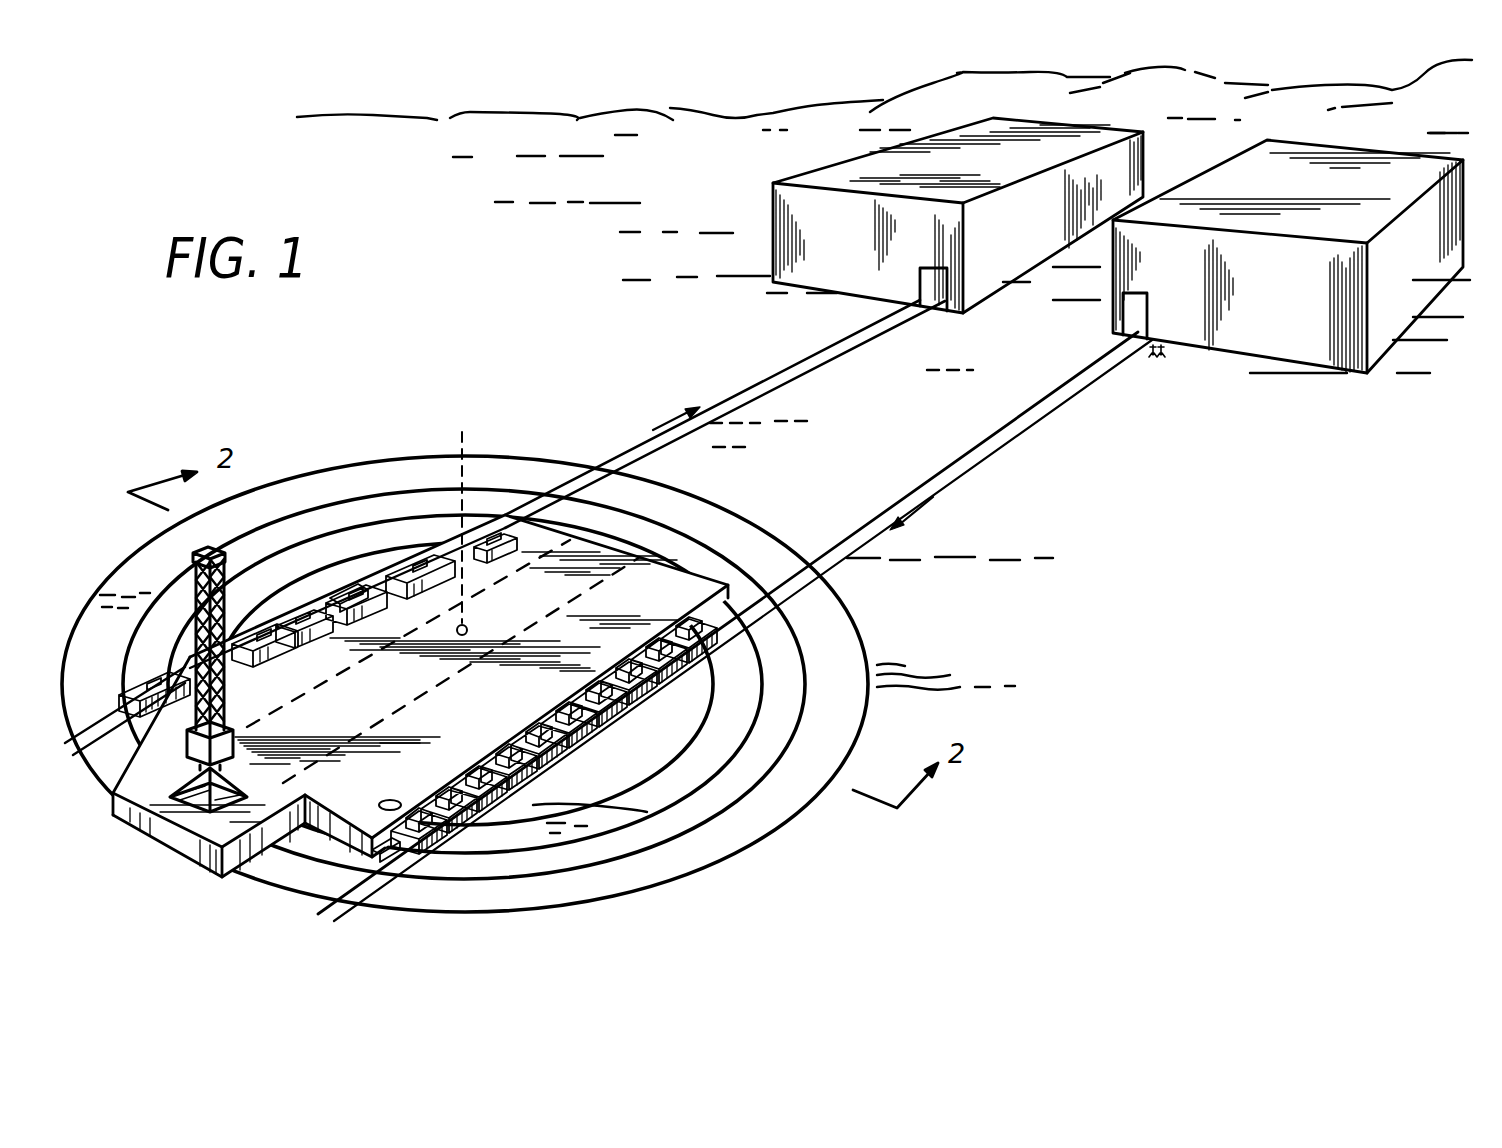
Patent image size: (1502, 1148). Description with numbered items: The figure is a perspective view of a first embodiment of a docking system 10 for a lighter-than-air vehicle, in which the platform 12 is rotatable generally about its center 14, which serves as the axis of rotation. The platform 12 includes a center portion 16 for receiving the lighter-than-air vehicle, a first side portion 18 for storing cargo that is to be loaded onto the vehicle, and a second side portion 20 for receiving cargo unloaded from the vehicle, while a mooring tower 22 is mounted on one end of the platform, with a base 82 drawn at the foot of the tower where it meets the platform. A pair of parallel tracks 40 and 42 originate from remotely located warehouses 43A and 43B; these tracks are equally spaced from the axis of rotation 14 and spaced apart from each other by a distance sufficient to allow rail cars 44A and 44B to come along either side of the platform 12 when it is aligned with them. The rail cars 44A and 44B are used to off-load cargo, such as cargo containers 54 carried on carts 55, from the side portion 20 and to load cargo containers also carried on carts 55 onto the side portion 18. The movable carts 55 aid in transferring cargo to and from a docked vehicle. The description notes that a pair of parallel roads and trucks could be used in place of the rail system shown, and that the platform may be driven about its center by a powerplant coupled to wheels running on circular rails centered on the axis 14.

The docking system 10 is at (970, 650).
The platform 12 is at (203, 872).
The center (axis of rotation) 14 is at (461, 436).
The center portion 16 is at (640, 517).
The first side portion 18 is at (658, 572).
The second side portion 20 is at (598, 478).
The mooring tower 22 is at (188, 588).
The track 40 is at (776, 380).
The track 42 is at (1000, 437).
The warehouse 43A is at (823, 176).
The warehouse 43B is at (1313, 346).
The rail car 44A is at (480, 518).
The rail car 44B is at (718, 640).
The cargo container 54 is at (367, 580).
The cart 55 is at (353, 605).
The tower base 82 is at (175, 766).